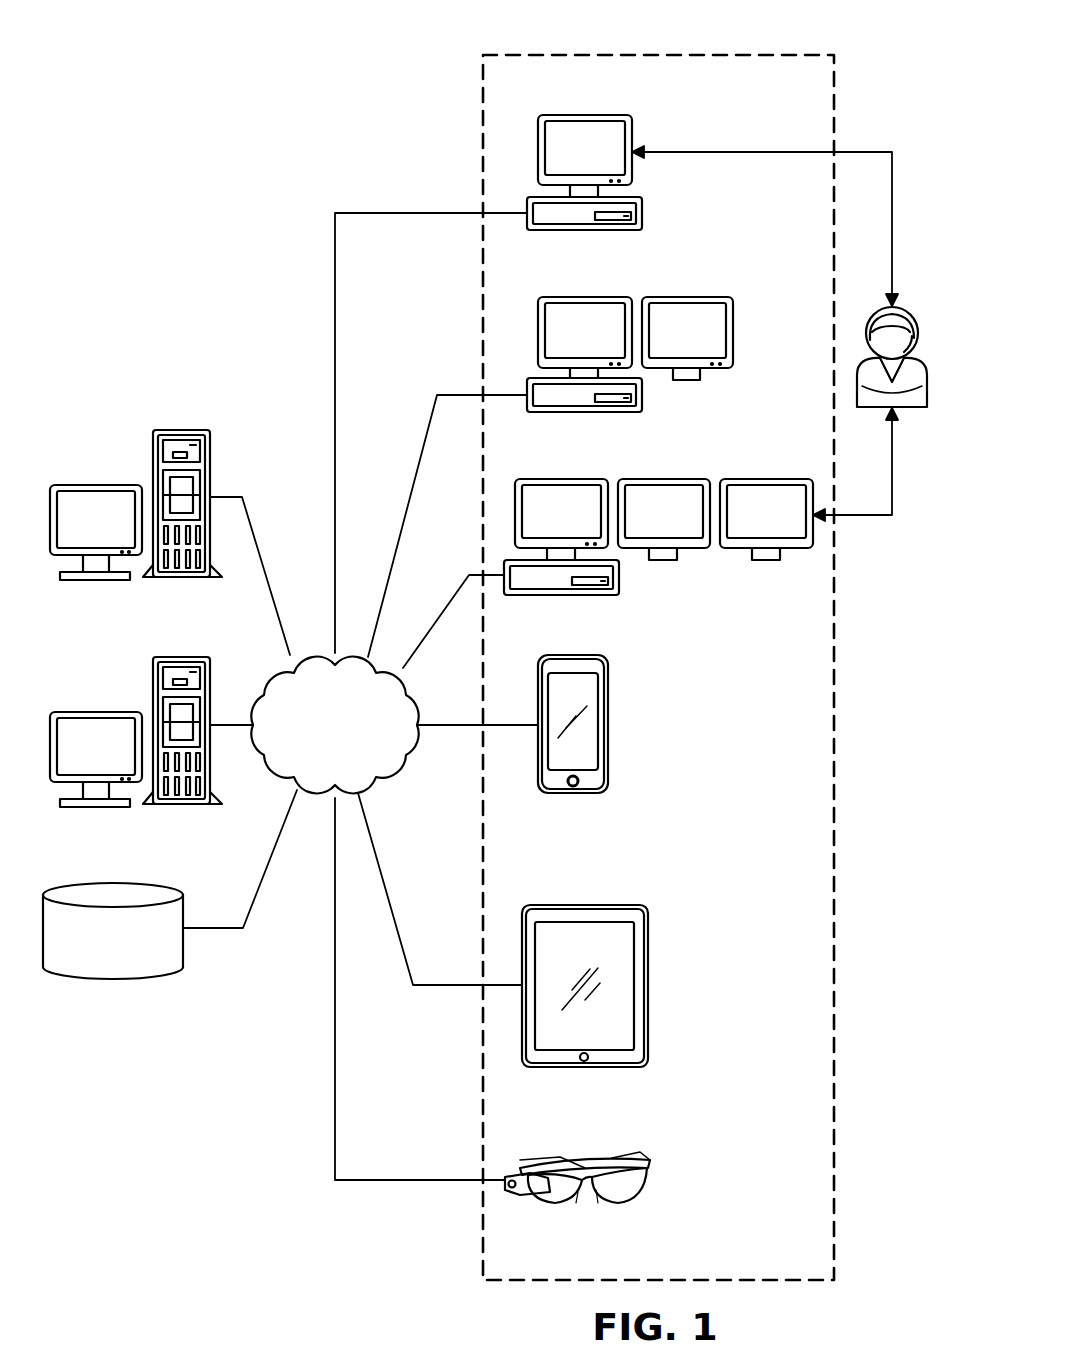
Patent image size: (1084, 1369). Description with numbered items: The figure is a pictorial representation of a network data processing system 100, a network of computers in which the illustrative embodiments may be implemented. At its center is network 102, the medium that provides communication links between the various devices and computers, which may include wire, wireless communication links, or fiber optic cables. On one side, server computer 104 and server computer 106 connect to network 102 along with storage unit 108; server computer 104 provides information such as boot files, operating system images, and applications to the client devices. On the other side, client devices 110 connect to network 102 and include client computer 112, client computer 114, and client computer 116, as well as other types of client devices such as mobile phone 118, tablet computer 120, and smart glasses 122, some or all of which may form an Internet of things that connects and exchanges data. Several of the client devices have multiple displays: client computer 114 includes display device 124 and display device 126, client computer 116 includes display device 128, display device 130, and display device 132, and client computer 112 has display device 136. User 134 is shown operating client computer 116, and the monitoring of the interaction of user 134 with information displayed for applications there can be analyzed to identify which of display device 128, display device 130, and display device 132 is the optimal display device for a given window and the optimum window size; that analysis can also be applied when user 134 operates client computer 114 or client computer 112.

The network data processing system 100 is at (232, 302).
The network 102 is at (313, 758).
The server computer 104 is at (95, 484).
The server computer 106 is at (95, 711).
The storage unit 108 is at (113, 980).
The client devices 110 is at (706, 46).
The client computer 112 is at (623, 187).
The client computer 114 is at (630, 369).
The client computer 116 is at (658, 551).
The mobile phone 118 is at (608, 741).
The tablet computer 120 is at (648, 994).
The smart glasses 122 is at (650, 1168).
The display device 124 is at (565, 347).
The display device 126 is at (667, 347).
The display device 128 is at (644, 528).
The display device 130 is at (541, 528).
The display device 132 is at (746, 528).
The user 134 is at (906, 316).
The display device 136 is at (565, 164).